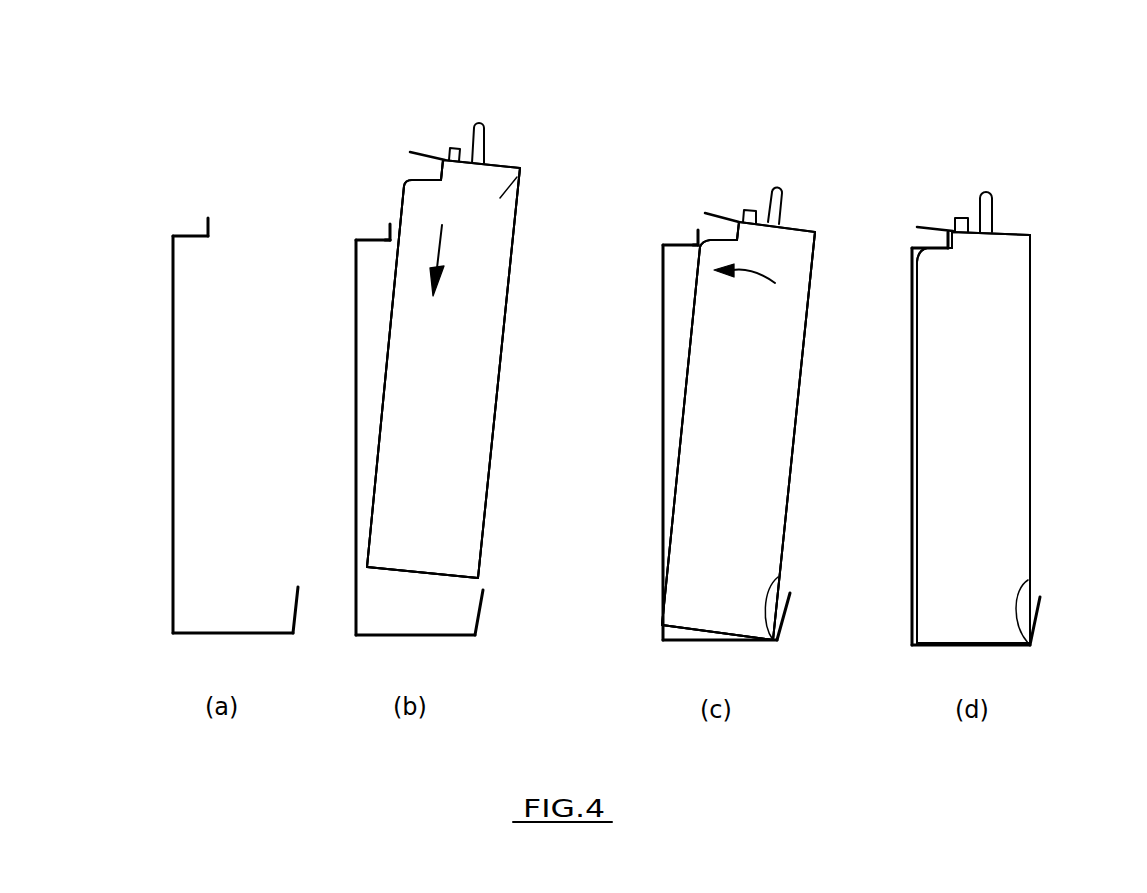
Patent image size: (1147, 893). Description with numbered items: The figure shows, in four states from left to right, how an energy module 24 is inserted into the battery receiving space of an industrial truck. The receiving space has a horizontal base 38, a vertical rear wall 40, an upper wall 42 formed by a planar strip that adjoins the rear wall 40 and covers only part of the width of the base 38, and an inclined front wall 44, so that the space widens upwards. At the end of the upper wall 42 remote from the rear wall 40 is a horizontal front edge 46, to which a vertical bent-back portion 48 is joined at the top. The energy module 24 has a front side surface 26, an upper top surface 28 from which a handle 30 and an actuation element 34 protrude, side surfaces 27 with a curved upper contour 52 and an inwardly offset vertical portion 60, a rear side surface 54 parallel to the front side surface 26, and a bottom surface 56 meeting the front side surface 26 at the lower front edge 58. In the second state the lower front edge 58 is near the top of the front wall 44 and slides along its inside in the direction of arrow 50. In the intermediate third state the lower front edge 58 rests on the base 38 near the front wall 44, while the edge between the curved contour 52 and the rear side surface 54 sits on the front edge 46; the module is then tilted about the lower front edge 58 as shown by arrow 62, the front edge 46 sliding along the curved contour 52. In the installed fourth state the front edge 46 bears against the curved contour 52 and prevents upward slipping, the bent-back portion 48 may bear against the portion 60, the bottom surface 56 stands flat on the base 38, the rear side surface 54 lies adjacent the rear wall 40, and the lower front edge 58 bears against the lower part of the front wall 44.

The energy module 24 is at (513, 167).
The front side surface 26 is at (518, 227).
The side surfaces 27 is at (462, 437).
The upper top surface 28 is at (493, 165).
The handle 30 is at (478, 122).
The actuation element 34 is at (450, 146).
The base 38 is at (216, 631).
The rear wall 40 is at (177, 362).
The upper wall 42 is at (197, 238).
The front wall 44 is at (295, 612).
The front edge 46 is at (392, 227).
The bent-back portion 48 is at (205, 225).
The arrow 50 is at (438, 258).
The curved upper contour 52 is at (437, 173).
The rear side surface 54 is at (398, 213).
The bottom surface 56 is at (407, 573).
The lower front edge 58 is at (480, 577).
The portion 60 is at (415, 178).
The arrow 62 is at (757, 270).